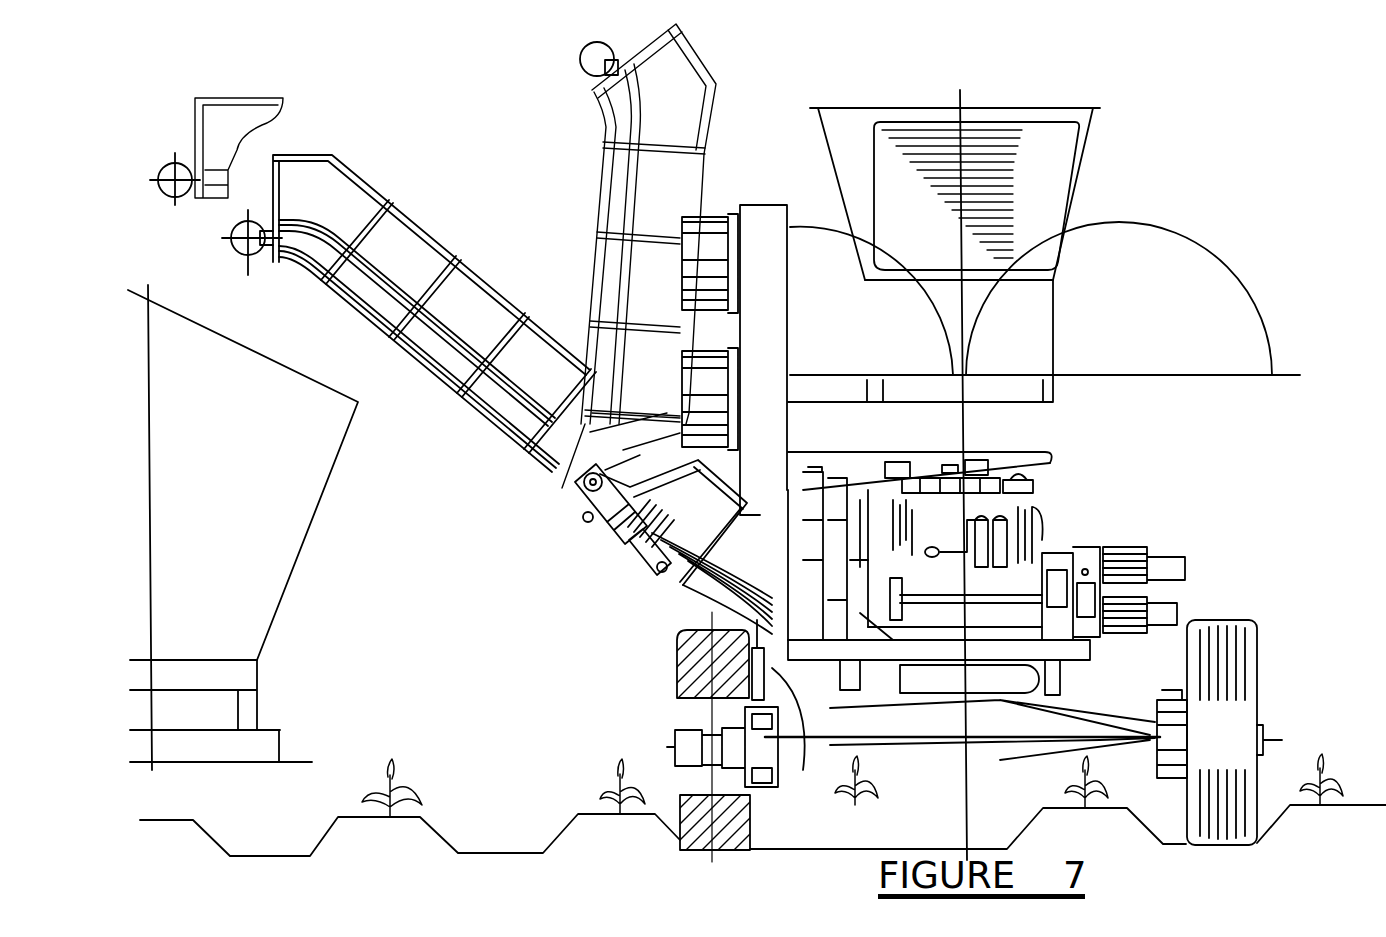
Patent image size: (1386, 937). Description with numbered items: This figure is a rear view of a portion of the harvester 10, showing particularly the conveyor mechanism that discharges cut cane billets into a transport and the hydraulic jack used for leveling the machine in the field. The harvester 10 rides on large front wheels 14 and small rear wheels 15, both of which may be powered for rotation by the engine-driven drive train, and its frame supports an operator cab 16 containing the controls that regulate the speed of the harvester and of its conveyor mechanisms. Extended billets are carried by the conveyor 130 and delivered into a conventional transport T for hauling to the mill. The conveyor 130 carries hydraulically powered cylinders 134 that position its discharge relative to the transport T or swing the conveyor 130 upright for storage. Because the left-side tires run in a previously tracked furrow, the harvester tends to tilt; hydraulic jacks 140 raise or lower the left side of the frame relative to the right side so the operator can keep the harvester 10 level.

The harvester 10 is at (1128, 218).
The large front wheels 14 is at (677, 665).
The small rear wheels 15 is at (1187, 652).
The operator cab 16 is at (835, 177).
The conveyor 130 is at (604, 170).
The hydraulically powered cylinders 134 is at (625, 552).
The hydraulic jacks 140 is at (748, 712).
The transport T is at (320, 516).